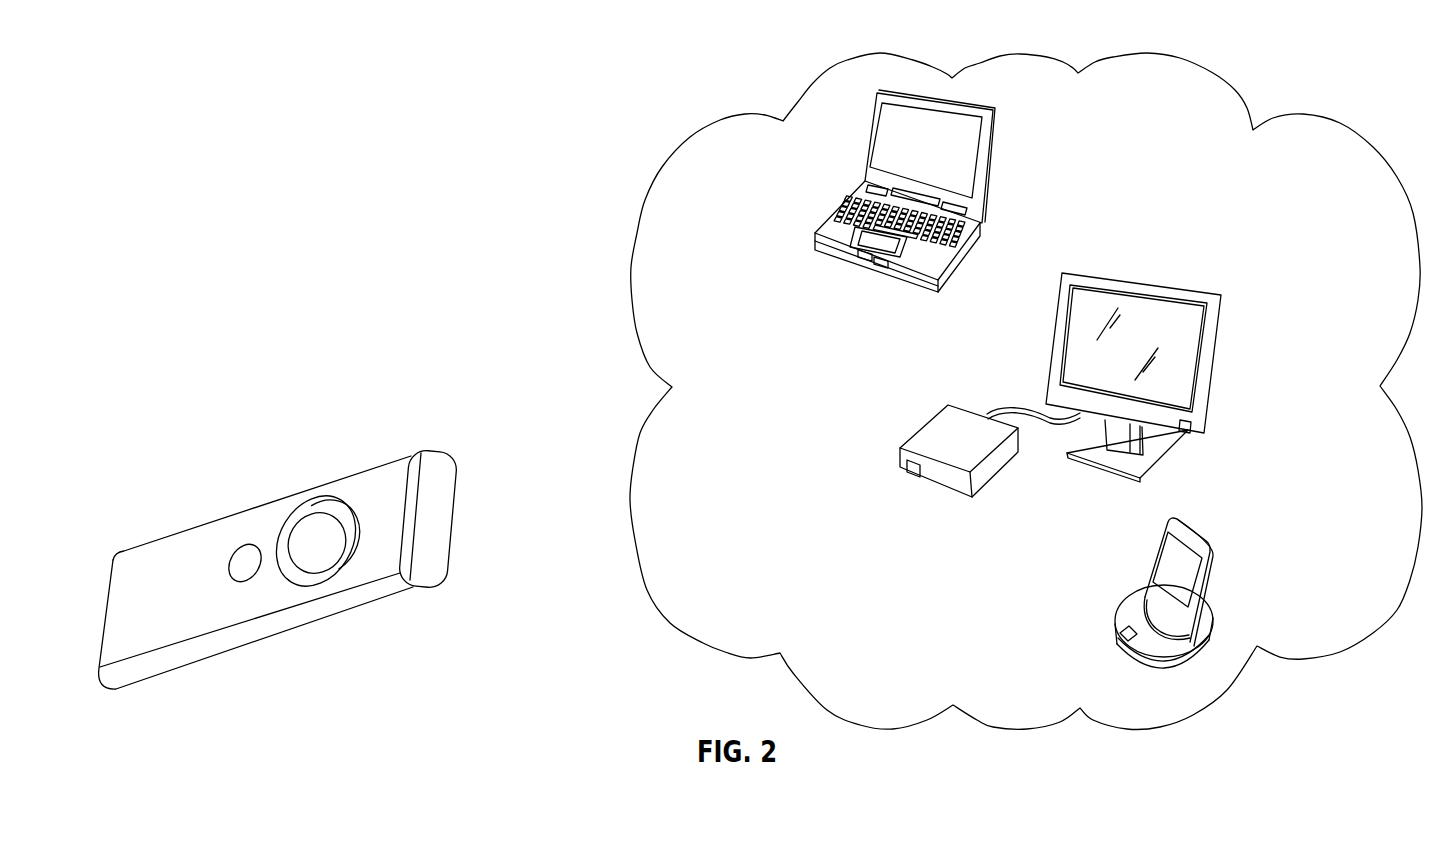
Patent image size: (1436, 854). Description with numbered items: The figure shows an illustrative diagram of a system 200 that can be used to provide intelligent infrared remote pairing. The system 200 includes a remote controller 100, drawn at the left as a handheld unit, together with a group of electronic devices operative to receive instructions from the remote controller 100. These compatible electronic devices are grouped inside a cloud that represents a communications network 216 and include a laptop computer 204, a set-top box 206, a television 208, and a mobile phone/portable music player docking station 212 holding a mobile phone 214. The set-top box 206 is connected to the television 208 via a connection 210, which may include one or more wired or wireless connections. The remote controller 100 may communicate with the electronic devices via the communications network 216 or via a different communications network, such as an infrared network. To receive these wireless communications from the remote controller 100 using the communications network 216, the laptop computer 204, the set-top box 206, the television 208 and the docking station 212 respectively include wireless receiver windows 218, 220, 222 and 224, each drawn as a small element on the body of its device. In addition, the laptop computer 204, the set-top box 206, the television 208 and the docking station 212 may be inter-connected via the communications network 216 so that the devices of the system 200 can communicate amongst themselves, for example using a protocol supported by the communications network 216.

The remote controller 100 is at (270, 515).
The system 200 is at (449, 233).
The laptop computer 204 is at (991, 142).
The set-top box 206 is at (932, 419).
The television 208 is at (1137, 283).
The connection 210 is at (1007, 412).
The mobile phone/portable music player docking station 212 is at (1123, 602).
The mobile phone 214 is at (1212, 573).
The communications network 216 is at (820, 92).
The wireless receiver window 218 is at (858, 257).
The wireless receiver window 220 is at (908, 477).
The wireless receiver window 222 is at (1195, 433).
The wireless receiver window 224 is at (1117, 636).